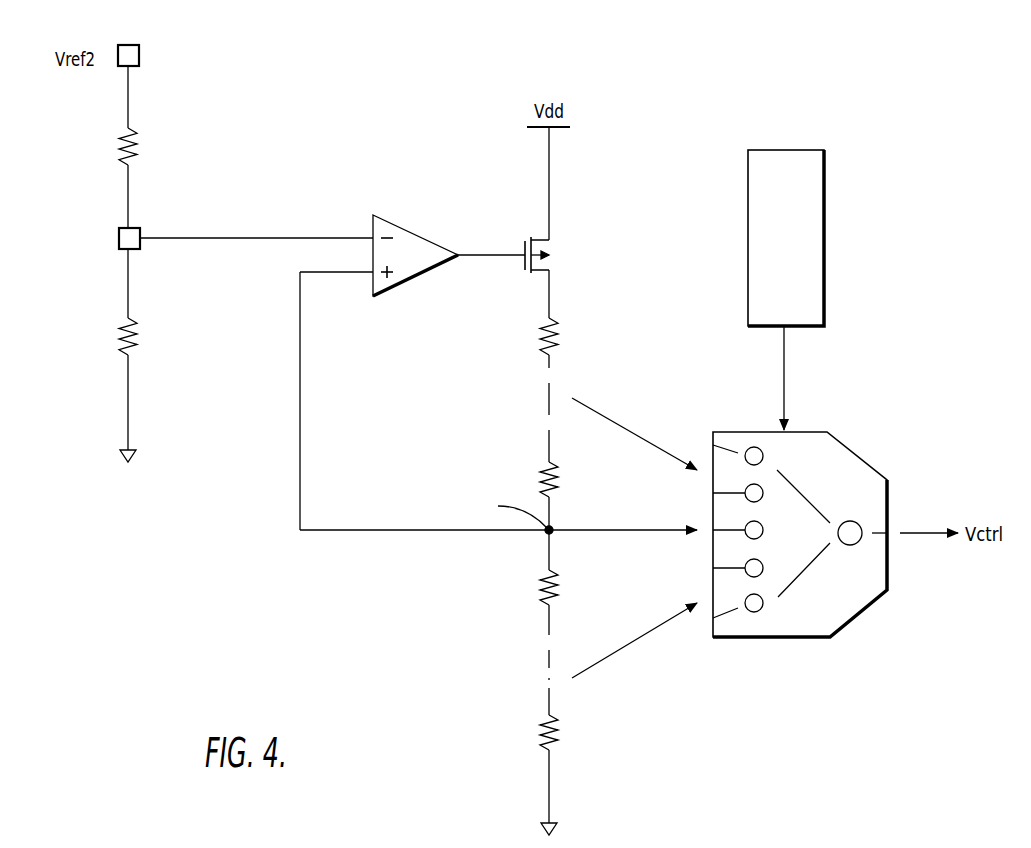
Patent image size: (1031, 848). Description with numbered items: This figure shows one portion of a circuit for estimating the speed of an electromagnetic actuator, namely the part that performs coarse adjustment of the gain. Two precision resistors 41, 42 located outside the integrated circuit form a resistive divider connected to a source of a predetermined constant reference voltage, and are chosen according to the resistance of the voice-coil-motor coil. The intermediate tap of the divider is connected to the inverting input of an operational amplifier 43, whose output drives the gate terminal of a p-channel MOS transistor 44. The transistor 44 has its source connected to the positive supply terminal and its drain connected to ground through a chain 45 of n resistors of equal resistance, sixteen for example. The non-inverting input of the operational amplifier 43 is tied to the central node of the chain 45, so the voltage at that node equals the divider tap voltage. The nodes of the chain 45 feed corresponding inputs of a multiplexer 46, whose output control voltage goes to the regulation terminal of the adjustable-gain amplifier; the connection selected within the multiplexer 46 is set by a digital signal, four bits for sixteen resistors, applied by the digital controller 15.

The precision resistor 41 is at (138, 148).
The precision resistor 42 is at (138, 344).
The operational amplifier 43 is at (395, 225).
The p-channel MOS transistor 44 is at (553, 240).
The chain of resistors 45 is at (525, 563).
The digital controller 15 is at (826, 237).
The multiplexer 46 is at (820, 638).